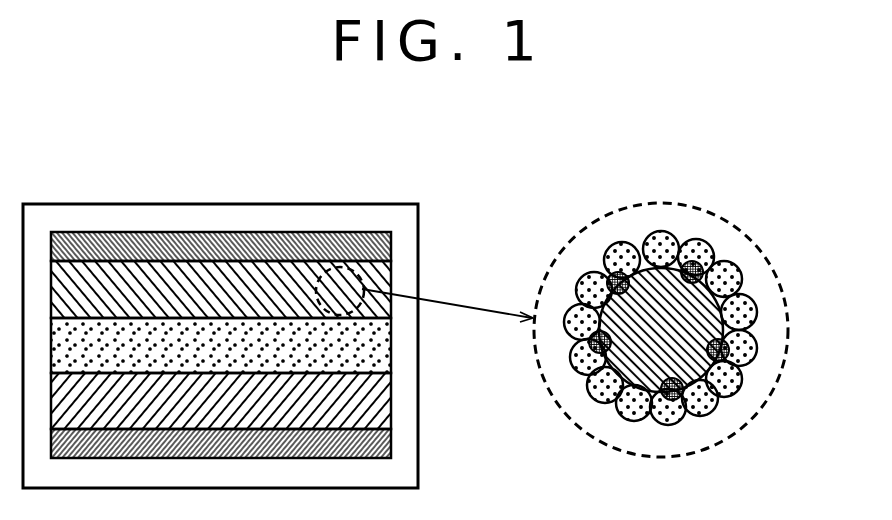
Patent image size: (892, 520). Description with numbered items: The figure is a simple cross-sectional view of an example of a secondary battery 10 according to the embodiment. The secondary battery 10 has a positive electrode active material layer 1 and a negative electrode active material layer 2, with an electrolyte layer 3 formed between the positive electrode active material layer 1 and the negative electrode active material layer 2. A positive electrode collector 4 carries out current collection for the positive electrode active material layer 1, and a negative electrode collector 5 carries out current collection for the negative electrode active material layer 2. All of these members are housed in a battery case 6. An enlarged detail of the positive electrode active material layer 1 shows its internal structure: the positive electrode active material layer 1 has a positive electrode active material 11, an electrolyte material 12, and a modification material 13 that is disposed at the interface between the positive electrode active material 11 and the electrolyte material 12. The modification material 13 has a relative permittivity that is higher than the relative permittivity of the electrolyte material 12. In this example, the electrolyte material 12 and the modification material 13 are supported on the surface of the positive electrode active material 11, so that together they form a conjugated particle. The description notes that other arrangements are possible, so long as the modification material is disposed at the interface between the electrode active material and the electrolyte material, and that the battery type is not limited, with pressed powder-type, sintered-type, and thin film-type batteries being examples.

The secondary battery 10 is at (391, 176).
The positive electrode collector 4 is at (378, 245).
The positive electrode active material layer 1 is at (378, 278).
The electrolyte layer 3 is at (378, 345).
The negative electrode active material layer 2 is at (376, 400).
The negative electrode collector 5 is at (378, 443).
The battery case 6 is at (376, 474).
The positive electrode active material 11 is at (713, 313).
The electrolyte material 12 is at (728, 272).
The modification material 13 is at (723, 350).